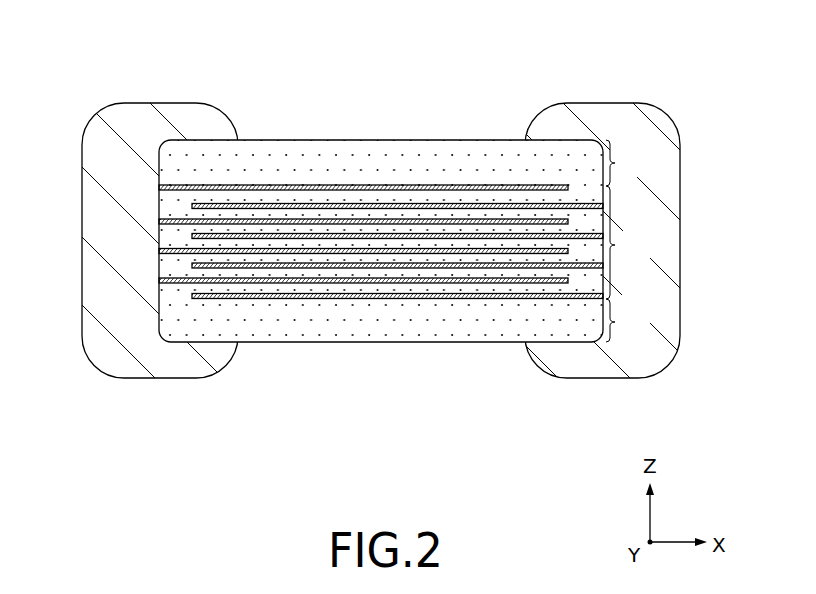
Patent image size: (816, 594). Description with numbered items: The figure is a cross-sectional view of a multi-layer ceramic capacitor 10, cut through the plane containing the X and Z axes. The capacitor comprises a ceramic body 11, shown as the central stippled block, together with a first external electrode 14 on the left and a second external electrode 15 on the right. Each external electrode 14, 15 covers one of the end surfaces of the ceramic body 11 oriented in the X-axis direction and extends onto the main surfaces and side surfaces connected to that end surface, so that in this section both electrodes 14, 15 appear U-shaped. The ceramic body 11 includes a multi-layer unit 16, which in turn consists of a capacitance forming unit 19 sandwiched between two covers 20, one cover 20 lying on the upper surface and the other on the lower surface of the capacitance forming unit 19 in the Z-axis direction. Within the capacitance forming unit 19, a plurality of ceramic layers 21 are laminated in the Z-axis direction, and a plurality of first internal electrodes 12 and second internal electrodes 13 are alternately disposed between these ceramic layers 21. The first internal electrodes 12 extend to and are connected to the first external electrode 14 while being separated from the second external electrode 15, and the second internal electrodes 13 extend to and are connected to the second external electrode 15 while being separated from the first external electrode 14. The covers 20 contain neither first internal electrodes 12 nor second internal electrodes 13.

The multi-layer ceramic capacitor 10 is at (408, 210).
The ceramic body 11 is at (407, 210).
The first internal electrodes 12 is at (312, 186).
The second internal electrodes 13 is at (502, 207).
The first external electrode 14 is at (97, 242).
The second external electrode 15 is at (672, 240).
The multi-layer unit 16 is at (318, 328).
The capacitance forming unit 19 is at (631, 242).
The covers 20 is at (630, 241).
The ceramic layers 21 is at (415, 197).